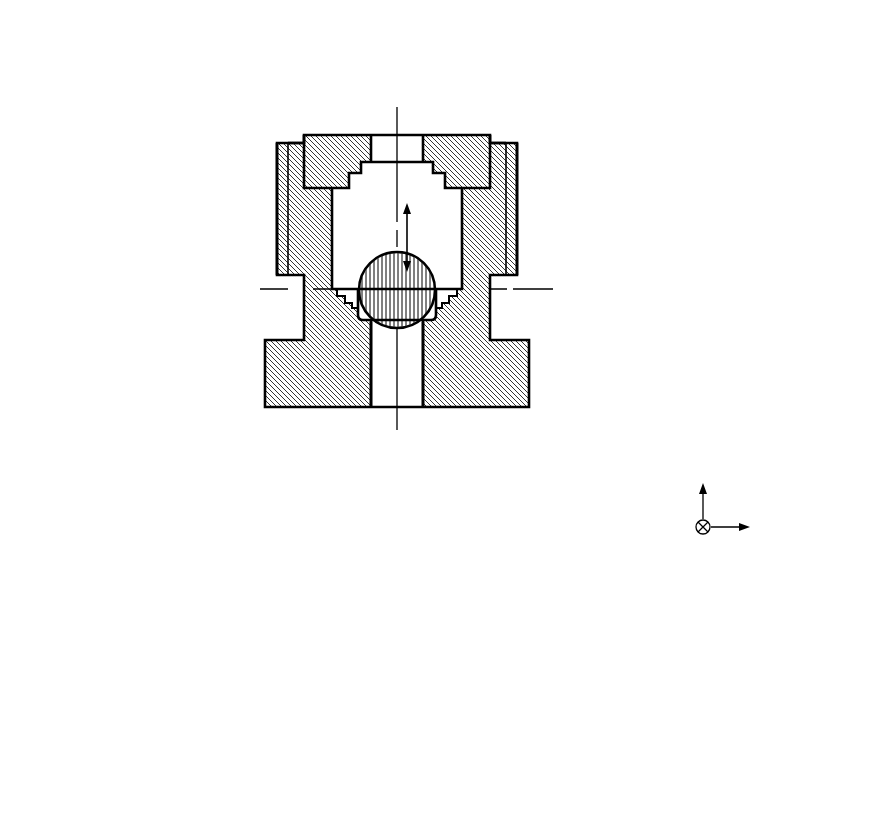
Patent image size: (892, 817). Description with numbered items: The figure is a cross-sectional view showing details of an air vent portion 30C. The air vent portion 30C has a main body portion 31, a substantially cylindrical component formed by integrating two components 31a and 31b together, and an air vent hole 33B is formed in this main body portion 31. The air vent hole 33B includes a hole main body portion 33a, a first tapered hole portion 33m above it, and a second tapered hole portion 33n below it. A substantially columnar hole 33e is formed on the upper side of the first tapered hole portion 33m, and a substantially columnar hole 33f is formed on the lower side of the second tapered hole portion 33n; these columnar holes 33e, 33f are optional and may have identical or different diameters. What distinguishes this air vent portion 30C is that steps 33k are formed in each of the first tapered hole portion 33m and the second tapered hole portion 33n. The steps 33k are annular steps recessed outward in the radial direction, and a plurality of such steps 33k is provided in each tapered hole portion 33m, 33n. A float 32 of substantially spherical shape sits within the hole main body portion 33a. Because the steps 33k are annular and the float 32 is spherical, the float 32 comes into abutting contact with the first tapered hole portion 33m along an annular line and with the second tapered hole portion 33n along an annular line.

The air vent portion 30C is at (708, 45).
The main body portion 31 is at (152, 90).
The component of main body portion 31a is at (303, 140).
The component of main body portion 31b is at (277, 162).
The float 32 is at (367, 273).
The air vent hole 33B is at (680, 128).
The hole main body portion 33a is at (438, 244).
The columnar hole 33e is at (432, 151).
The columnar hole 33f is at (404, 357).
The steps 33k is at (423, 175).
The first tapered hole portion 33m is at (436, 194).
The second tapered hole portion 33n is at (458, 292).